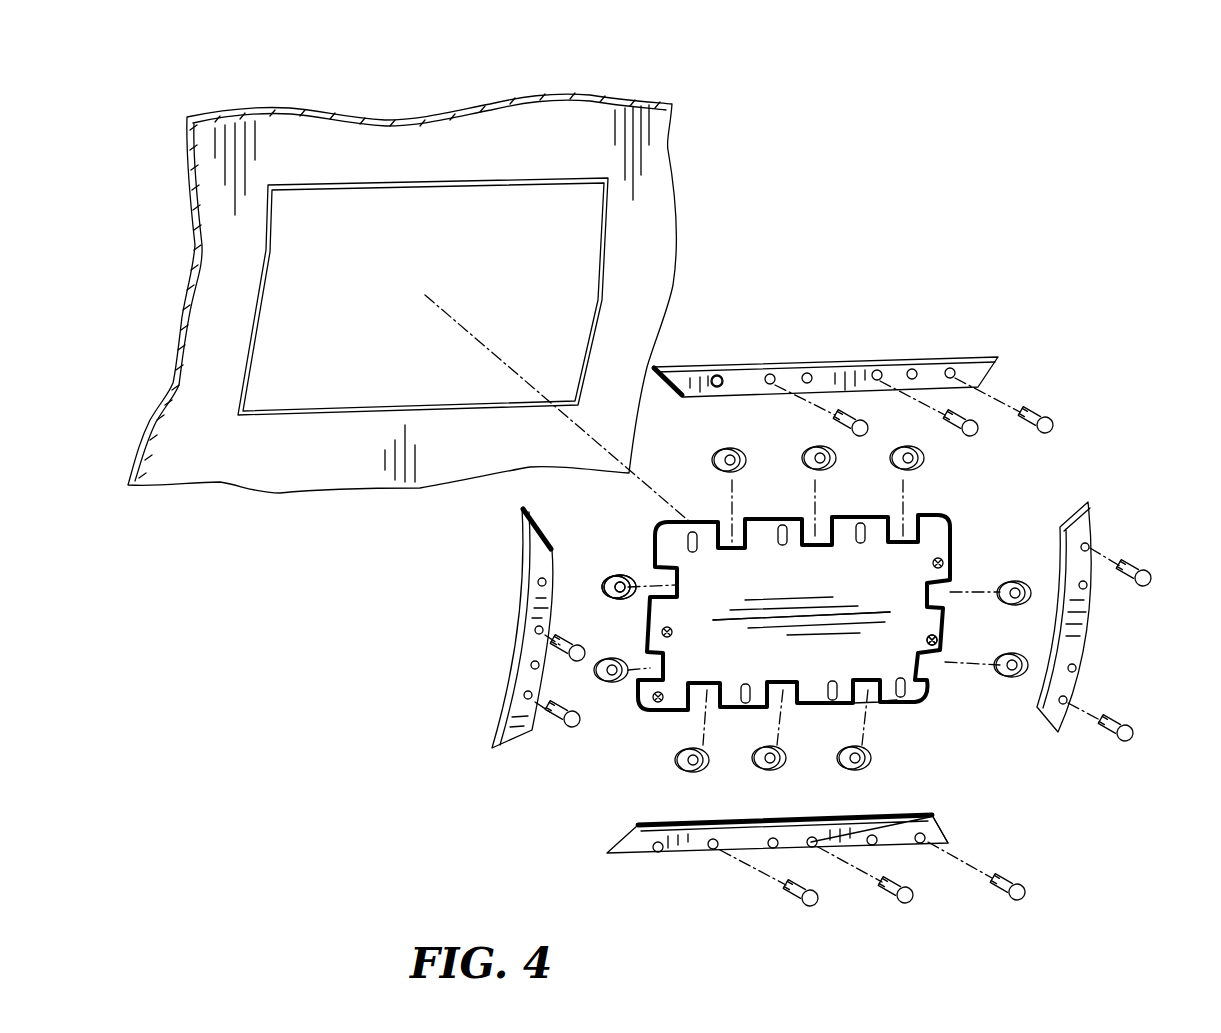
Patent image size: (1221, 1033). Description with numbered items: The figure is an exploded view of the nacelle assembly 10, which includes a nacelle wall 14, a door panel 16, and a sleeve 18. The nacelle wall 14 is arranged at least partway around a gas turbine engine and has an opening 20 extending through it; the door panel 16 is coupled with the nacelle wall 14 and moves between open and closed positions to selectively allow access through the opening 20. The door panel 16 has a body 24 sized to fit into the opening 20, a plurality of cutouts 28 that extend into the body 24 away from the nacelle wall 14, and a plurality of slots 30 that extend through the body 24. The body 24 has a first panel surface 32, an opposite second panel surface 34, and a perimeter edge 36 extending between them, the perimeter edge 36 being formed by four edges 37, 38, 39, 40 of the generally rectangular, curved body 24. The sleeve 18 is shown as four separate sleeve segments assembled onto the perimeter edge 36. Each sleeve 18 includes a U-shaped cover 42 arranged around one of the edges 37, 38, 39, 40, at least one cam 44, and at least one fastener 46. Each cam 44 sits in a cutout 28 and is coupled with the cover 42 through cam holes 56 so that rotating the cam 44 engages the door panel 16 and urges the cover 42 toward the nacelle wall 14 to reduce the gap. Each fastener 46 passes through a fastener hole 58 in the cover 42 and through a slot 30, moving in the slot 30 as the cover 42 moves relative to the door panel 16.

The nacelle assembly 10 is at (960, 158).
The nacelle wall 14 is at (182, 190).
The opening 20 is at (415, 248).
The door panel 16 is at (968, 566).
The sleeve 18 is at (848, 345).
The body 24 is at (905, 597).
The cutouts 28 is at (875, 712).
The slots 30 is at (825, 750).
The first panel surface 32 is at (925, 622).
The second panel surface 34 is at (660, 585).
The perimeter edge 36 is at (932, 503).
The edge 37 is at (648, 553).
The edge 38 is at (780, 500).
The edge 39 is at (957, 557).
The edge 40 is at (658, 700).
The U-shaped cover 42 is at (922, 352).
The cam 44 is at (858, 412).
The fastener 46 is at (975, 420).
The cam holes 56 is at (797, 383).
The fastener holes 58 is at (932, 825).